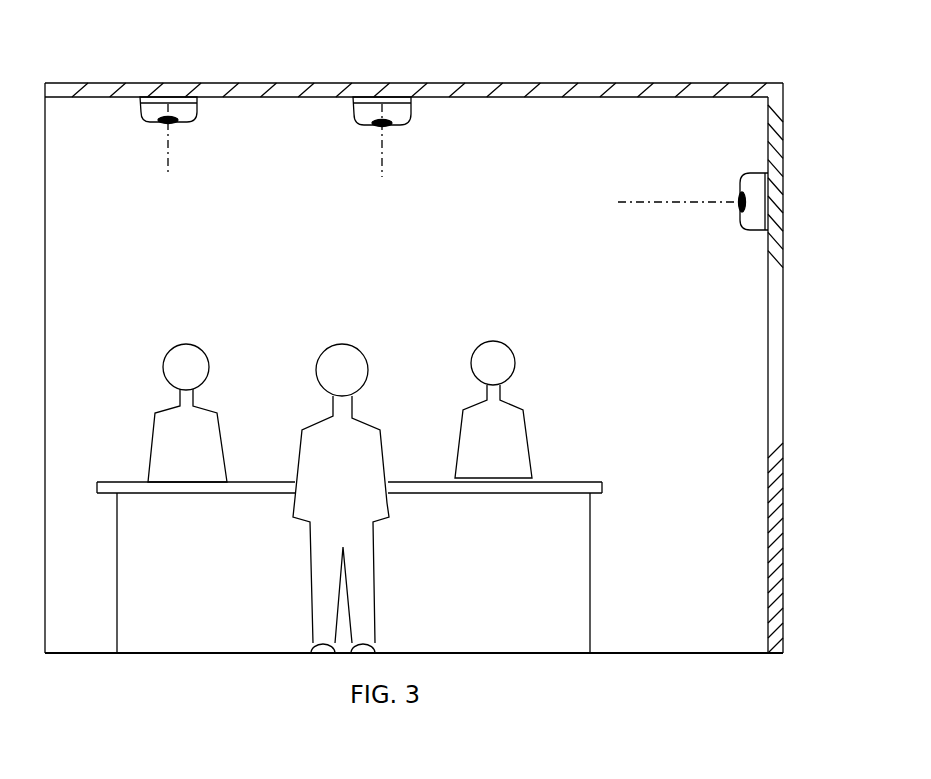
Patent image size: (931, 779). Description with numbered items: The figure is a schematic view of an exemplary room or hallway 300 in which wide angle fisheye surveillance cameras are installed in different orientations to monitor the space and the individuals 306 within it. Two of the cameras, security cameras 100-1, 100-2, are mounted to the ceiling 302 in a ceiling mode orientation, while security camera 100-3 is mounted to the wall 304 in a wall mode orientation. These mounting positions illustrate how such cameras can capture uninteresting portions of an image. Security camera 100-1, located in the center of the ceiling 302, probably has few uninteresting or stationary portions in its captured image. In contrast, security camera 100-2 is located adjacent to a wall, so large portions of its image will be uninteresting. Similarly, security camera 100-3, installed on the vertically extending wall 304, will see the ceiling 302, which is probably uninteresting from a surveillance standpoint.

The room or hallway 300 is at (182, 40).
The ceiling 302 is at (428, 90).
The wall 304 is at (777, 338).
The security camera 100-1 is at (393, 143).
The security camera 100-2 is at (181, 141).
The security camera 100-3 is at (727, 232).
The individuals 306 is at (162, 442).